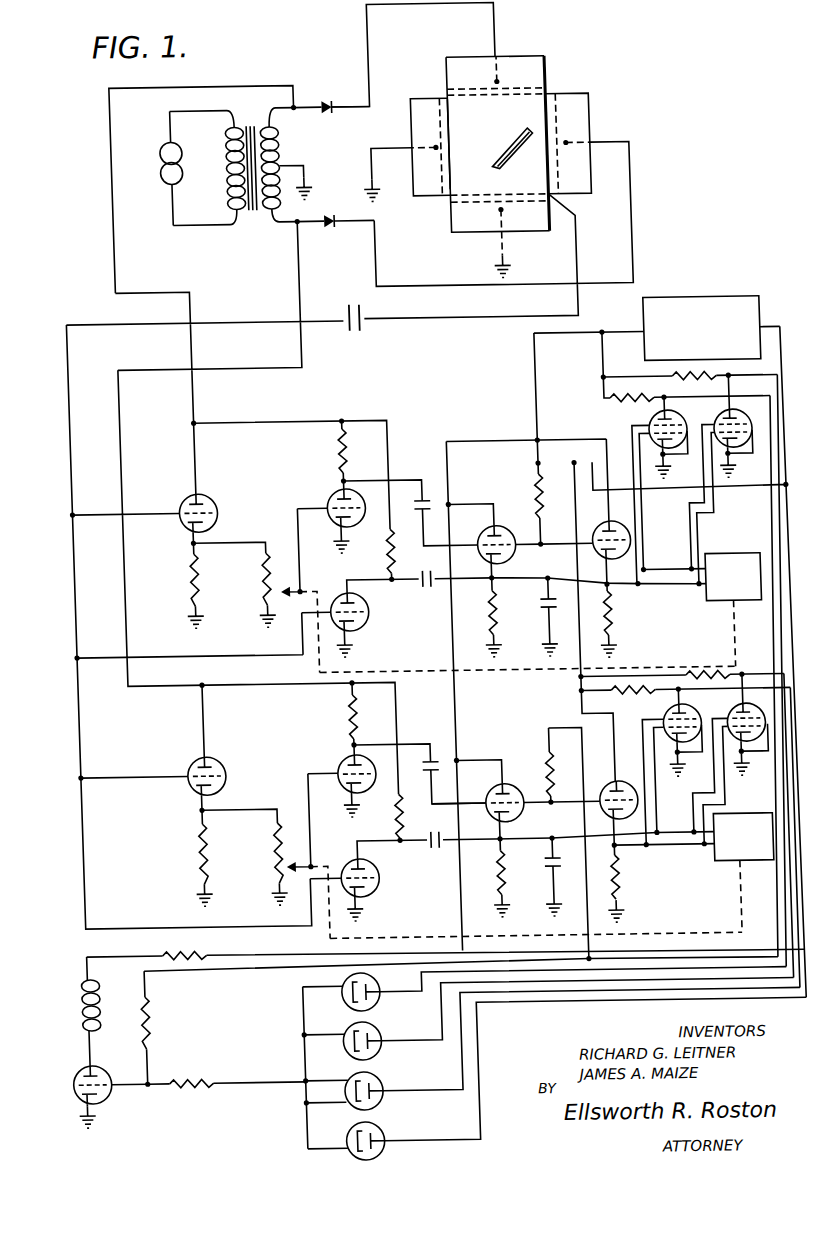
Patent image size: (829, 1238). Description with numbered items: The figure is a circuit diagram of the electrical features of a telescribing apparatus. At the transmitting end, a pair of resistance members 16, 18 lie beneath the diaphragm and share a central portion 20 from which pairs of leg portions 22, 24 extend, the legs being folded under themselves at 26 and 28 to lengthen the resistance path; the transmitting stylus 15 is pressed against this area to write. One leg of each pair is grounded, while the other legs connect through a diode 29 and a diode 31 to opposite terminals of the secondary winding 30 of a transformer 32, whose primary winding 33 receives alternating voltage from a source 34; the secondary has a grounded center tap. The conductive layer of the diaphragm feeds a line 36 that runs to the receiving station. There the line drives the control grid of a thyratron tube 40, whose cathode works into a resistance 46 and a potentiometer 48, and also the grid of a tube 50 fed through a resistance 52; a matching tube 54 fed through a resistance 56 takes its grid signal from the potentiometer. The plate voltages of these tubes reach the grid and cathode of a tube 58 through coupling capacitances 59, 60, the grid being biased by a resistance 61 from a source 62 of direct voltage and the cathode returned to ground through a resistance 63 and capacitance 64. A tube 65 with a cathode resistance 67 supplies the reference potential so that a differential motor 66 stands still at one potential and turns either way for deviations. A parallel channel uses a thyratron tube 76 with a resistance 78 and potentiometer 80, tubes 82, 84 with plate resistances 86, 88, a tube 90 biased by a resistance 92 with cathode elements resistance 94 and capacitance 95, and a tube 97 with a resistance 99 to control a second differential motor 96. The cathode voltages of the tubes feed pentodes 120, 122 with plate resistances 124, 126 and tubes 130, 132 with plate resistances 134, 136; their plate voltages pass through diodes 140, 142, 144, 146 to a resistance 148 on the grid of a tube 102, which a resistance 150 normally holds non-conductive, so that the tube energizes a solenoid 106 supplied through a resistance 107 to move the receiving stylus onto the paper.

The transmitting stylus 15 is at (527, 141).
The resistance member 16 is at (598, 72).
The resistance member 18 is at (443, 202).
The central portion 20 is at (478, 126).
The leg portions 22 is at (556, 60).
The leg portions 24 is at (607, 122).
The folded portions 26 is at (530, 62).
The folded portions 28 is at (427, 127).
The diode 29 is at (346, 98).
The secondary winding 30 is at (296, 144).
The diode 31 is at (335, 229).
The transformer 32 is at (266, 216).
The primary winding 33 is at (240, 206).
The source of alternating voltage 34 is at (178, 173).
The line 36 is at (104, 318).
The thyratron tube 40 is at (216, 504).
The resistance 46 is at (186, 594).
The potentiometer 48 is at (260, 588).
The tube 50 is at (367, 623).
The resistance 52 is at (389, 545).
The tube 54 is at (331, 500).
The resistance 56 is at (338, 454).
The tube 58 is at (515, 526).
The coupling capacitance 59 is at (426, 498).
The coupling capacitance 60 is at (429, 590).
The resistance 61 is at (541, 500).
The source of direct voltage 62 is at (714, 301).
The resistance 63 is at (487, 612).
The capacitance 64 is at (538, 610).
The tube 65 is at (607, 527).
The motor 66 is at (740, 558).
The resistance 67 is at (612, 619).
The thyratron tube 76 is at (216, 765).
The resistance 78 is at (188, 854).
The potentiometer 80 is at (263, 856).
The tube 82 is at (370, 887).
The tube 84 is at (331, 771).
The resistance 86 is at (389, 812).
The resistance 88 is at (342, 718).
The tube 90 is at (520, 812).
The resistance 92 is at (543, 768).
The resistance 94 is at (488, 880).
The capacitance 95 is at (541, 870).
The differential motor 96 is at (722, 868).
The tube 97 is at (606, 786).
The resistance 99 is at (612, 883).
The tube 102 is at (59, 1079).
The solenoid 106 is at (69, 1004).
The resistance 107 is at (196, 951).
The pentode 120 is at (655, 422).
The pentode 122 is at (754, 420).
The resistance 124 is at (616, 402).
The resistance 126 is at (698, 385).
The tube 130 is at (702, 713).
The tube 132 is at (740, 762).
The resistance 134 is at (622, 697).
The resistance 136 is at (697, 677).
The diode 140 is at (333, 1079).
The diode 142 is at (333, 1129).
The diode 144 is at (333, 981).
The diode 146 is at (333, 1029).
The resistance 148 is at (192, 1088).
The resistance 150 is at (140, 1015).